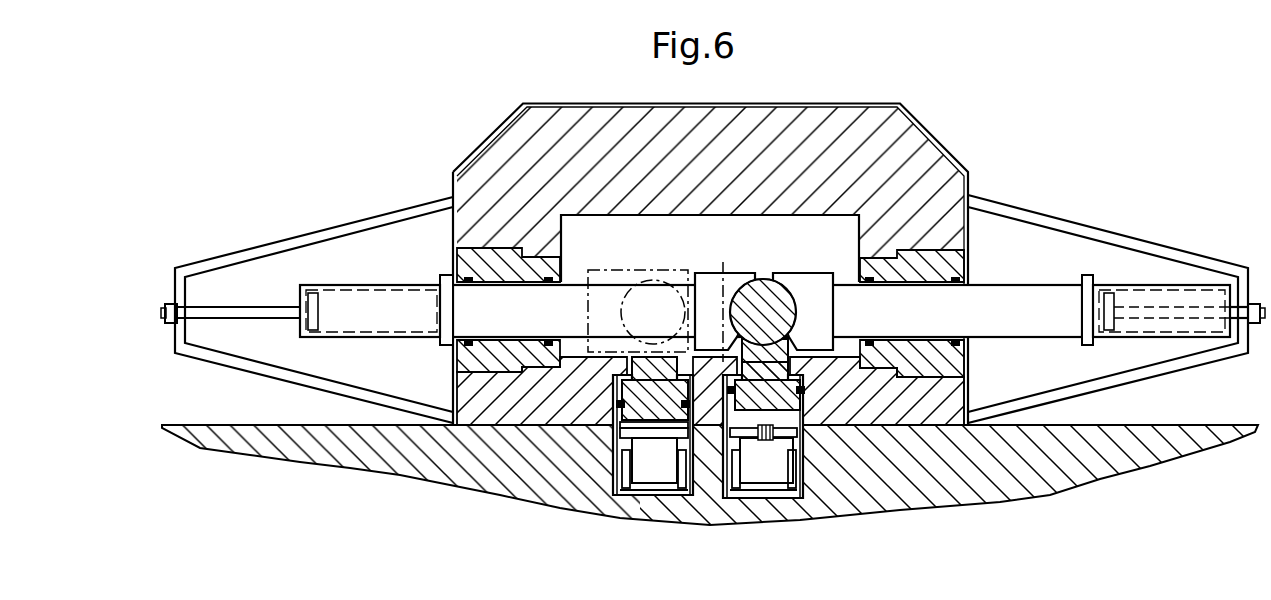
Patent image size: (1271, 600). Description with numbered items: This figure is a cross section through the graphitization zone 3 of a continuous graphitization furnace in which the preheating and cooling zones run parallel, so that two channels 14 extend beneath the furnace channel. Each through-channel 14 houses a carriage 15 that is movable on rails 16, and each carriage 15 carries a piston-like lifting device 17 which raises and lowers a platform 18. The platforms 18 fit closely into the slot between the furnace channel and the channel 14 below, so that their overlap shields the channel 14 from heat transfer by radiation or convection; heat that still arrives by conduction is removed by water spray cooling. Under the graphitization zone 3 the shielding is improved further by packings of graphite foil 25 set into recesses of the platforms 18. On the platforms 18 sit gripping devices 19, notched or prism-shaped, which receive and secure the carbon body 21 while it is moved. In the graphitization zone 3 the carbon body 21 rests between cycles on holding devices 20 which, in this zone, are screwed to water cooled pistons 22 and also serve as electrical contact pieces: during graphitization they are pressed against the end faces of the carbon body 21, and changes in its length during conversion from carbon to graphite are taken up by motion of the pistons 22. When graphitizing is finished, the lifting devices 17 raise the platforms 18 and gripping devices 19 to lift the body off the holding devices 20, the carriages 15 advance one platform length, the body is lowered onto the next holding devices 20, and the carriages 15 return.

The graphitization zone 3 is at (710, 265).
The through-channel 14 is at (685, 387).
The carriage 15 is at (763, 456).
The rails 16 is at (635, 429).
The piston-like lifting device 17 is at (758, 441).
The platform 18 is at (638, 383).
The gripping device 19 is at (647, 360).
The holding device 20 is at (710, 284).
The carbon body 21 is at (764, 283).
The water cooled piston 22 is at (393, 298).
The packing of graphite foil 25 is at (613, 403).